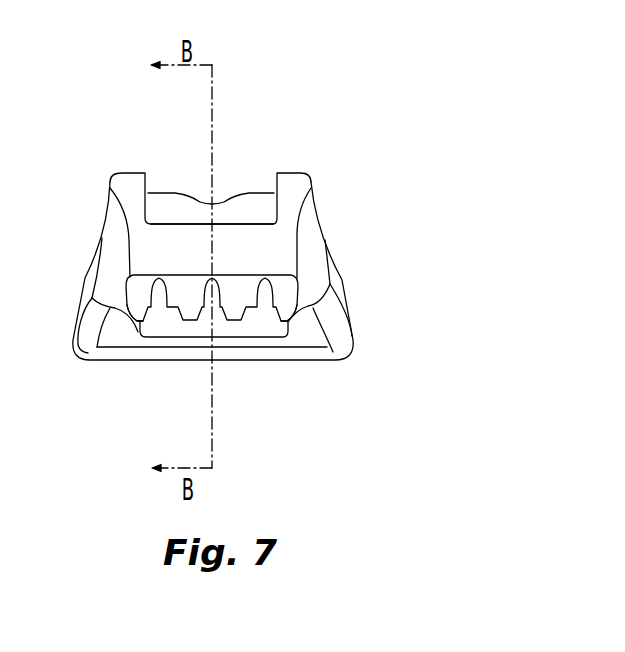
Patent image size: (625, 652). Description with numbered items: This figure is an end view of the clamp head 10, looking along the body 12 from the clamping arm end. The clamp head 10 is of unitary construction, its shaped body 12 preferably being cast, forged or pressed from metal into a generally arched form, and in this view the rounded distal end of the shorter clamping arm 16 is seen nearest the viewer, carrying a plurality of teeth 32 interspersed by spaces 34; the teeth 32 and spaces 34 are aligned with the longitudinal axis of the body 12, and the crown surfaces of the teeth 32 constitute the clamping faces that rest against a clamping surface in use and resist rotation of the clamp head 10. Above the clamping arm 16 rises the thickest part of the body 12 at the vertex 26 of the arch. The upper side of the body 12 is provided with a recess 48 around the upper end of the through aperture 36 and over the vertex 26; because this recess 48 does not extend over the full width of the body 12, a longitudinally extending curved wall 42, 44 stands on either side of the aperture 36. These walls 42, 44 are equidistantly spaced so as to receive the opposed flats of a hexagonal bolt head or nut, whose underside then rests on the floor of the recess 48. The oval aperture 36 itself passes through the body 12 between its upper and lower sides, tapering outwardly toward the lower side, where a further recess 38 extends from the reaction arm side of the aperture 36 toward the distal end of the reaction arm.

The clamp head 10 is at (397, 112).
The body 12 is at (343, 295).
The clamping arm 16 is at (272, 248).
The vertex 26 is at (286, 172).
The teeth 32 is at (140, 322).
The spaces 34 is at (158, 278).
The through aperture 36 is at (195, 192).
The recess 38 is at (257, 332).
The curved wall 42 is at (128, 173).
The curved wall 44 is at (300, 168).
The recess 48 is at (250, 200).